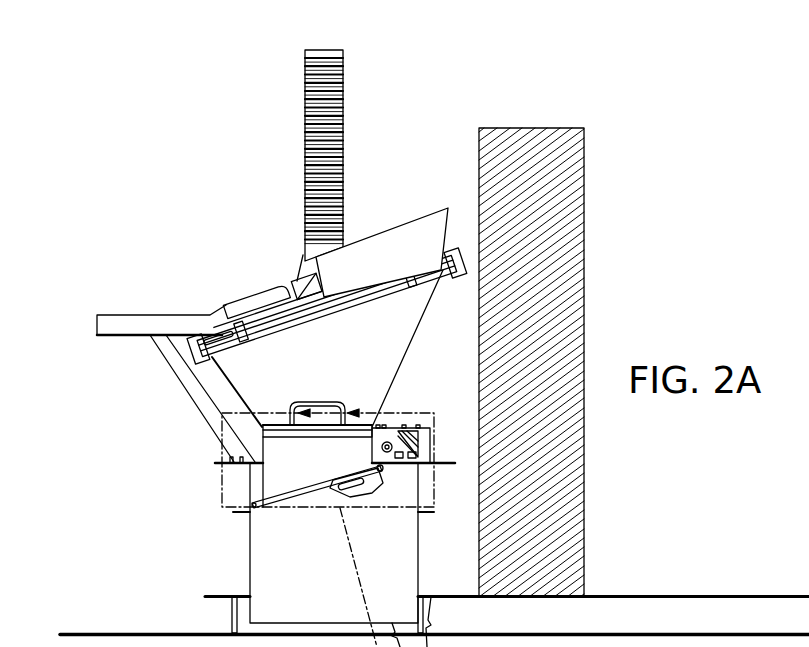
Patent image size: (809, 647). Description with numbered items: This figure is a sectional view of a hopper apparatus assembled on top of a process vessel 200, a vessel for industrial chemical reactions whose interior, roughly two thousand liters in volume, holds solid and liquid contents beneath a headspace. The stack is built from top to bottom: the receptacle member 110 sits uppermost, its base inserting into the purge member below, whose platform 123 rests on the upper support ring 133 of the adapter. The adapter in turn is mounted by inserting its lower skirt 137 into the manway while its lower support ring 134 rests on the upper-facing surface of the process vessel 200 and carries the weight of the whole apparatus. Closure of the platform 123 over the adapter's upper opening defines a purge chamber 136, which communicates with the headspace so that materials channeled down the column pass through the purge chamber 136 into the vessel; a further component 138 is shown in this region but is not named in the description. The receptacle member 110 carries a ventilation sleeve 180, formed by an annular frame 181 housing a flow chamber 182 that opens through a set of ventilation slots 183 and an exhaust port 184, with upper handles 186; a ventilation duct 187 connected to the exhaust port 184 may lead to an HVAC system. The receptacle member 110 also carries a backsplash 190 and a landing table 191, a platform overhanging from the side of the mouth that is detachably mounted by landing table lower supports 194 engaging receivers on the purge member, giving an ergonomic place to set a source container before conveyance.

The receptacle member 110 is at (195, 397).
The platform 123 is at (438, 462).
The upper support ring 133 is at (441, 465).
The lower support ring 134 is at (216, 595).
The purge chamber 136 is at (265, 540).
The lower skirt 137 is at (250, 603).
The pivot arm 138 is at (233, 511).
The ventilation sleeve 180 is at (228, 380).
The annular frame 181 is at (228, 322).
The flow chamber 182 is at (365, 295).
The ventilation slots 183 is at (313, 318).
The exhaust port 184 is at (300, 255).
The upper handles 186 is at (297, 287).
The ventilation duct 187 is at (305, 80).
The backsplash 190 is at (432, 212).
The landing table 191 is at (103, 313).
The landing table lower supports 194 is at (153, 345).
The process vessel 200 is at (633, 595).